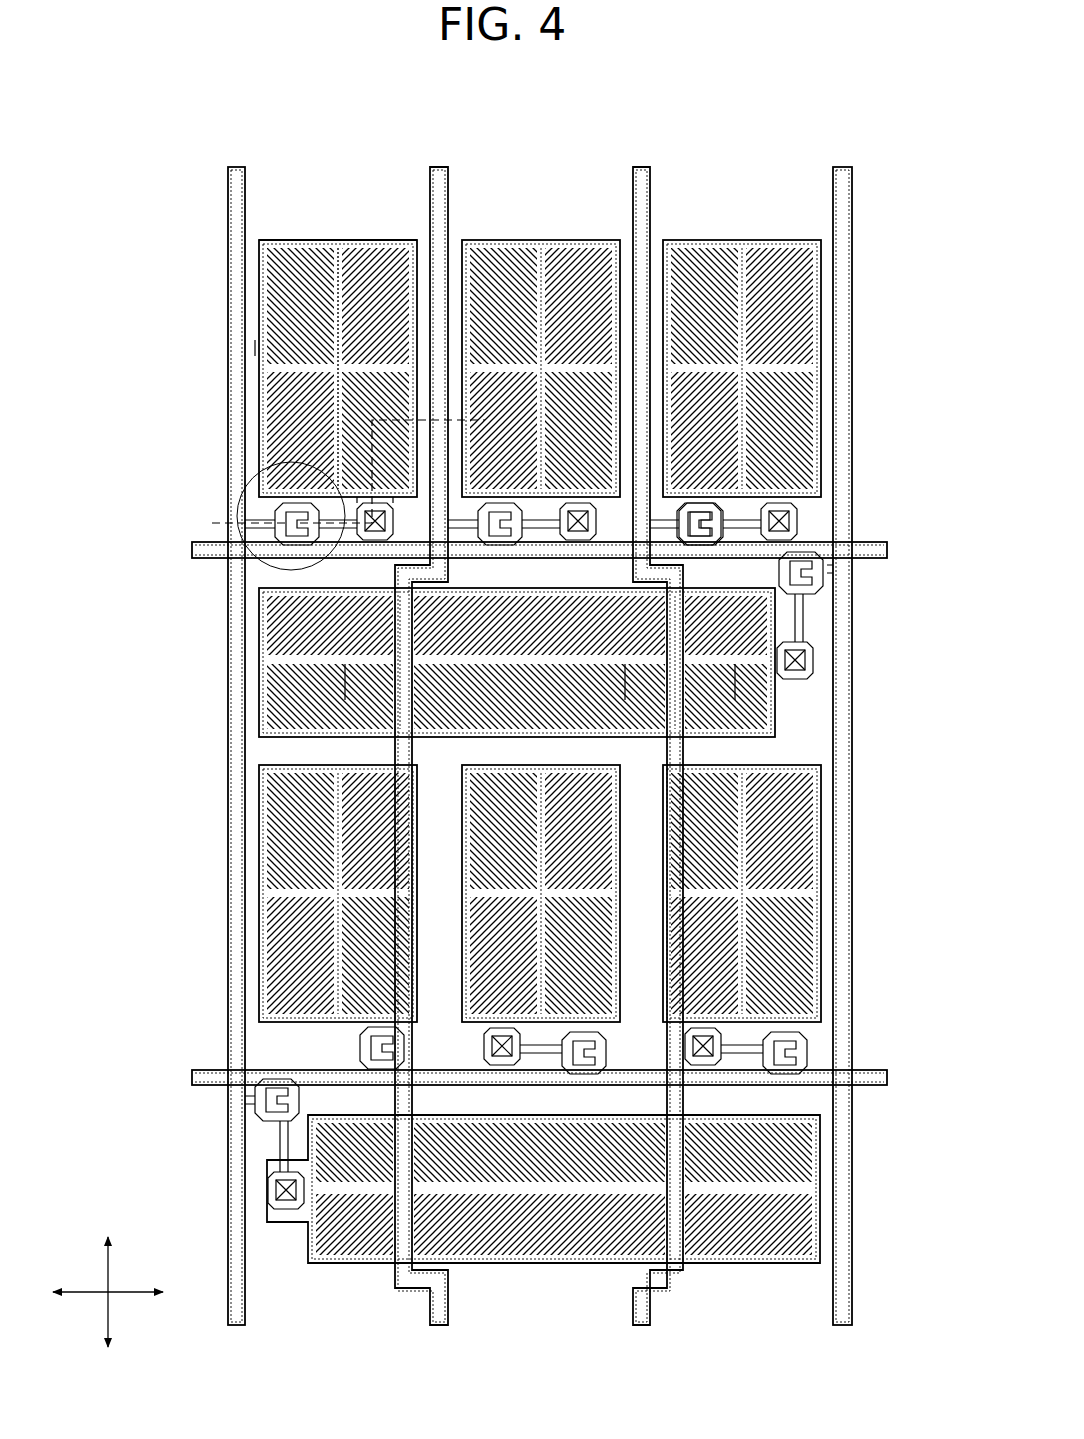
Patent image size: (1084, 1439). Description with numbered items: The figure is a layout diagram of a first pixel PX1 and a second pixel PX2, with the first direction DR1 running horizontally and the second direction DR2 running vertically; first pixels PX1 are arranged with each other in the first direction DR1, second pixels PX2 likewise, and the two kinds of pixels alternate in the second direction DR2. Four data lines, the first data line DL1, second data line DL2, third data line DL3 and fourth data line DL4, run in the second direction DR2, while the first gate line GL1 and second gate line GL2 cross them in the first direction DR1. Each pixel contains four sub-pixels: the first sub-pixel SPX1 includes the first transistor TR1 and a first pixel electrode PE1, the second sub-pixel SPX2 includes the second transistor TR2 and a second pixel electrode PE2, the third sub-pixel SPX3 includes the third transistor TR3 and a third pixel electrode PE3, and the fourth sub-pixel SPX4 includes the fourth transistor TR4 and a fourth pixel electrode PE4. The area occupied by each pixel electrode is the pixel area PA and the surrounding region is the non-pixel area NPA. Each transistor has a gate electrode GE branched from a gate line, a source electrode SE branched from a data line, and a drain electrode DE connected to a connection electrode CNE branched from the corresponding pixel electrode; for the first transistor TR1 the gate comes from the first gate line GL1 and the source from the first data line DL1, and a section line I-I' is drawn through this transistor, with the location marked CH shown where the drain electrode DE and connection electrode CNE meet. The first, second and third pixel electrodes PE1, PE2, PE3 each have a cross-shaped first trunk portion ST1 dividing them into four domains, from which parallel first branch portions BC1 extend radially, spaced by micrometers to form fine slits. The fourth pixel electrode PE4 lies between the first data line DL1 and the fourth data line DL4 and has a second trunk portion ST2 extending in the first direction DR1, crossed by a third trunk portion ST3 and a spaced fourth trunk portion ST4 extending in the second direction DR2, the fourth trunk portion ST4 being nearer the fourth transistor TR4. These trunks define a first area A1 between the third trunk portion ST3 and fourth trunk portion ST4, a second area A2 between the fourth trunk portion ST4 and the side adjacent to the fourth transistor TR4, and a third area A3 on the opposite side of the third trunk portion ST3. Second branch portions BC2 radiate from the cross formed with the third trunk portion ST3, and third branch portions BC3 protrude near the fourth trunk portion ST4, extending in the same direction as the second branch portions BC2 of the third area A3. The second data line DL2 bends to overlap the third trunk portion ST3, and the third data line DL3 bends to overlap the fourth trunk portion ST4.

The first data line DL1 is at (238, 175).
The second data line DL2 is at (440, 175).
The third data line DL3 is at (642, 175).
The fourth data line DL4 is at (843, 175).
The first gate line GL1 is at (890, 550).
The second gate line GL2 is at (890, 1080).
The first pixel PX1 is at (511, 616).
The second pixel PX2 is at (160, 908).
The first sub-pixel SPX1 is at (541, 552).
The second sub-pixel SPX2 is at (704, 616).
The third sub-pixel SPX3 is at (541, 552).
The fourth sub-pixel SPX4 is at (541, 883).
The first pixel electrode PE1 is at (262, 313).
The second pixel electrode PE2 is at (620, 386).
The third pixel electrode PE3 is at (818, 313).
The fourth pixel electrode PE4 is at (822, 1225).
The non-pixel area NPA is at (253, 347).
The pixel area PA is at (290, 238).
The first trunk portion ST1 is at (340, 268).
The first branch portions BC1 is at (383, 270).
The second branch portions BC2 is at (265, 590).
The third branch portions BC3 is at (745, 637).
The second trunk portion ST2 is at (345, 668).
The third trunk portion ST3 is at (400, 606).
The fourth trunk portion ST4 is at (680, 606).
The first transistor TR1 is at (505, 758).
The second transistor TR2 is at (495, 555).
The third transistor TR3 is at (700, 556).
The fourth transistor TR4 is at (830, 580).
The gate electrode GE is at (290, 503).
The source electrode SE is at (275, 520).
The drain electrode DE is at (250, 540).
The contact hole CH is at (365, 510).
The connection electrode CNE is at (355, 525).
The section line I is at (245, 524).
The section line I' is at (402, 465).
The first area A1 is at (537, 1240).
The second area A2 is at (358, 1240).
The third area A3 is at (745, 1240).
The first direction DR1 is at (136, 1293).
The second direction DR2 is at (110, 1275).